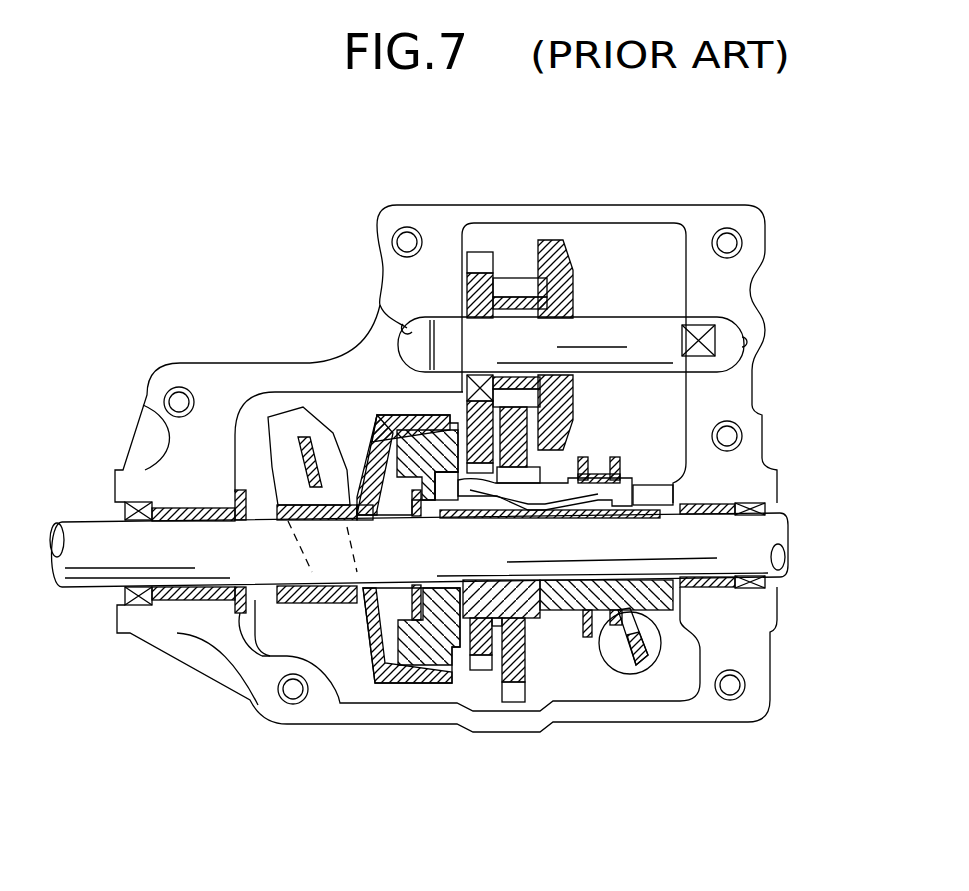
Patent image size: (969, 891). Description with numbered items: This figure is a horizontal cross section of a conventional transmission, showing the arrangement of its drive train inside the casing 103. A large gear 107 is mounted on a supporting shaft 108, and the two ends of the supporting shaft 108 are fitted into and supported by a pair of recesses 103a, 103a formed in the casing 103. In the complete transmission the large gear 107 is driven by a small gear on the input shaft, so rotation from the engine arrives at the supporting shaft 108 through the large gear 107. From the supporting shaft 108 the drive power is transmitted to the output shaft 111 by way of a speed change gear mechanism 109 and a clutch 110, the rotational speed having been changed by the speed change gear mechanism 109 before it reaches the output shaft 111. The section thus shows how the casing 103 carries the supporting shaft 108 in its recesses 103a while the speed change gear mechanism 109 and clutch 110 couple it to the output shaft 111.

The casing 103 is at (353, 723).
The recess 103a is at (408, 328).
The large gear 107 is at (573, 270).
The supporting shaft 108 is at (632, 342).
The speed change gear mechanism 109 is at (538, 664).
The clutch 110 is at (407, 403).
The output shaft 111 is at (487, 250).